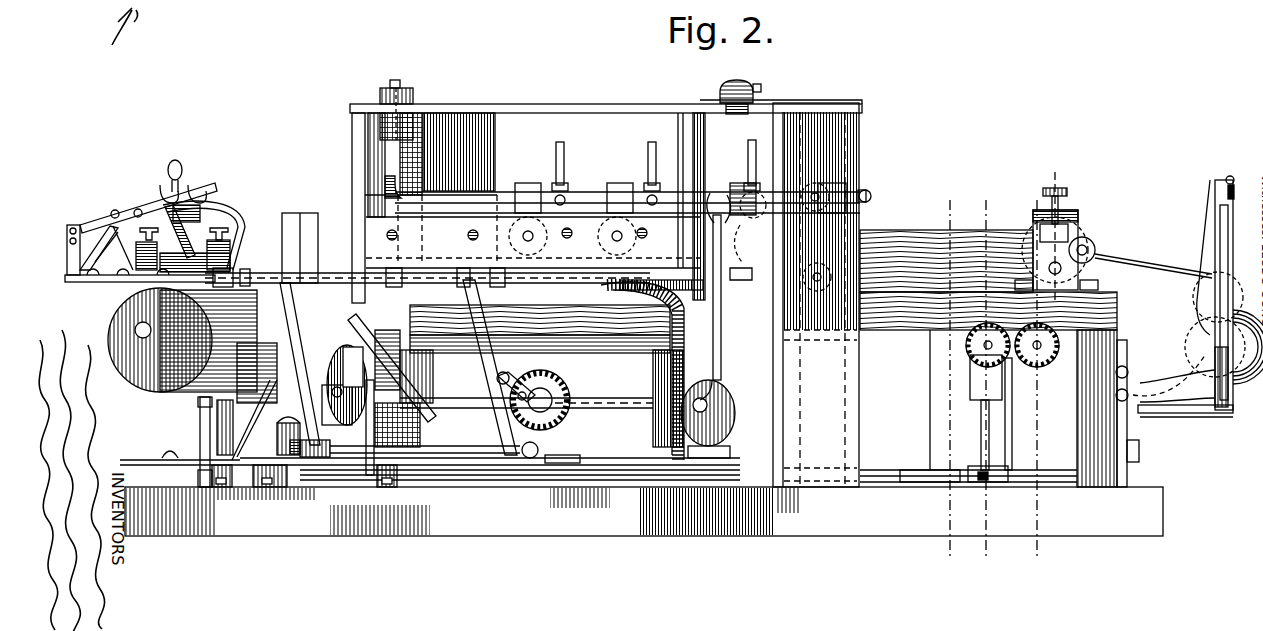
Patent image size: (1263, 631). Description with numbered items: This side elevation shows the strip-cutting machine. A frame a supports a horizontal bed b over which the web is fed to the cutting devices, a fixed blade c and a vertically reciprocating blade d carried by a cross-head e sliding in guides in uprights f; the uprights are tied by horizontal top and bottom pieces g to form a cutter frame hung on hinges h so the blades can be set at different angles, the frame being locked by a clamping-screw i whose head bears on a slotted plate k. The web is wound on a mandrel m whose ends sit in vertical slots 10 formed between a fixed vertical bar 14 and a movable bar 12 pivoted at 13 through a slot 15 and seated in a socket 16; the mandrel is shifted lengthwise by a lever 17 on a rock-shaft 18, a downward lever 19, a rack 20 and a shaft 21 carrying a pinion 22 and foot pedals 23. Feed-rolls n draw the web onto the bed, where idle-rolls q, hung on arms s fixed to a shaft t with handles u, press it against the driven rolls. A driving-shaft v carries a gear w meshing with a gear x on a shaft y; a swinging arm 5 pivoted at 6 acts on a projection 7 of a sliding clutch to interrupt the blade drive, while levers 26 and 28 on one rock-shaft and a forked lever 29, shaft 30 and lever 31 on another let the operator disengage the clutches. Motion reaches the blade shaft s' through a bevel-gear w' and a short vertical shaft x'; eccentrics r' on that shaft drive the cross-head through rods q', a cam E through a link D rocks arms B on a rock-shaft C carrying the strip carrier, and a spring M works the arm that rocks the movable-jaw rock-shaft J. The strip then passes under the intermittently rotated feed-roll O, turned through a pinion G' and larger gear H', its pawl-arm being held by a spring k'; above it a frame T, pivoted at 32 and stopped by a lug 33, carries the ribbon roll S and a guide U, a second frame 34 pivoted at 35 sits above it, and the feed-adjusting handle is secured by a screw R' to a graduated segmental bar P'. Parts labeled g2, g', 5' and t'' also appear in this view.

The plate k is at (816, 278).
The horizontal top and bottom pieces g is at (606, 100).
The hinges h is at (396, 86).
The clamping-screw i is at (749, 96).
The uprights f is at (360, 160).
The cross-head e is at (384, 196).
The idle-rolls q is at (613, 223).
The arms s is at (699, 183).
The handles u is at (660, 174).
The shaft t is at (717, 204).
The vertically-reciprocating blade d is at (533, 190).
The fixed blade c is at (390, 262).
The arms B is at (423, 266).
The rods q' is at (543, 246).
The bed or table b is at (817, 282).
The rock-shaft J is at (270, 272).
The short vertical shaft x' is at (374, 370).
The feed-roll O is at (110, 335).
The gear g2 is at (257, 363).
The lever 31 is at (240, 392).
The pivot 32 is at (68, 240).
The larger gear H' is at (216, 427).
The shaft 30 is at (198, 478).
The arms or pedals 23 is at (272, 488).
The shaft 21 is at (1050, 470).
The rock-shaft C is at (300, 470).
The lever 28 is at (340, 460).
The spring k' is at (399, 418).
The spring M is at (395, 470).
The frame T is at (84, 276).
The frame 34 is at (136, 206).
The pivot 35 is at (78, 228).
The lug 33 is at (128, 250).
The screw R' is at (188, 175).
The loose roll S is at (190, 218).
The segmental bar P' is at (206, 230).
The guide U is at (183, 247).
The horizontal shaft s' is at (576, 398).
The cam E is at (552, 382).
The link or yoke D is at (518, 378).
The bevel-gear w' is at (540, 329).
The gear or pinion G' is at (635, 370).
The eccentrics r' is at (719, 419).
The arm t'' is at (722, 379).
The foot g' is at (564, 450).
The shaft y is at (865, 242).
The frame a is at (905, 250).
The pinion 22 is at (905, 464).
The projection 7 is at (948, 377).
The pivot 6 is at (984, 377).
The swinging arm 5 is at (1035, 387).
The screw 5' is at (1055, 227).
The feed-rolls n is at (1080, 230).
The vertical slots 10 is at (1222, 254).
The driving-shaft v is at (972, 352).
The gear x is at (1035, 358).
The gear w is at (960, 378).
The lever 29 is at (980, 436).
The lever 26 is at (1012, 430).
The movable bar 12 is at (1234, 295).
The fixed vertical bar 14 is at (1205, 250).
The pivot 13 is at (1228, 178).
The vertical slot 15 is at (1228, 190).
The notch or fixed socket 16 is at (1224, 328).
The mandrel m is at (1200, 345).
The lever 17 is at (1230, 396).
The rock-shaft 18 is at (1185, 413).
The lever 19 is at (1130, 444).
The rack 20 is at (1139, 462).